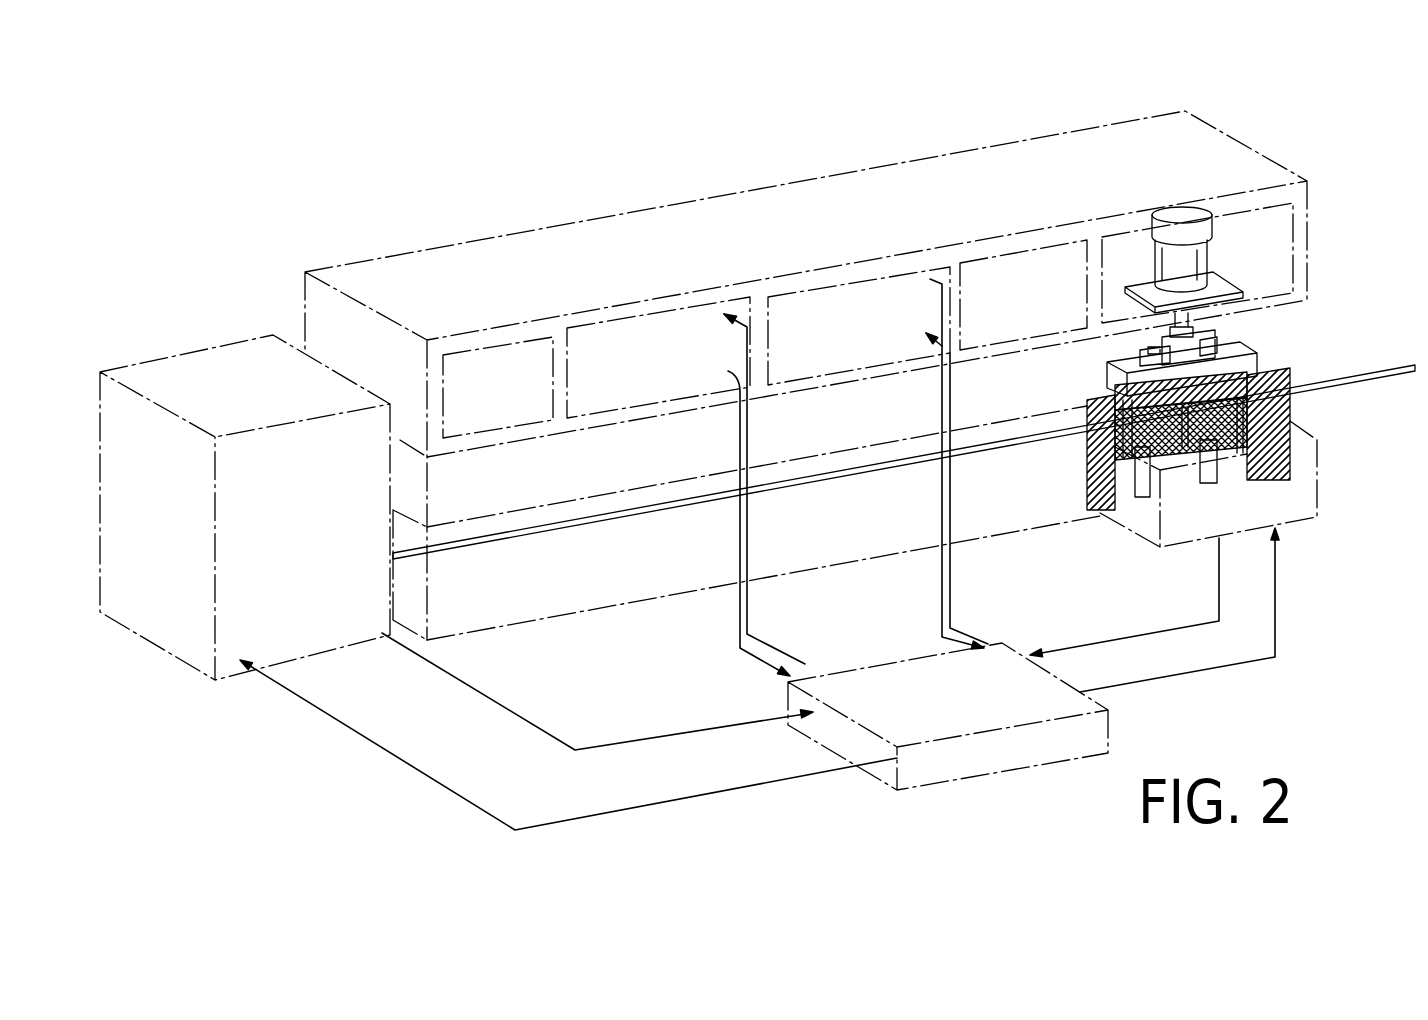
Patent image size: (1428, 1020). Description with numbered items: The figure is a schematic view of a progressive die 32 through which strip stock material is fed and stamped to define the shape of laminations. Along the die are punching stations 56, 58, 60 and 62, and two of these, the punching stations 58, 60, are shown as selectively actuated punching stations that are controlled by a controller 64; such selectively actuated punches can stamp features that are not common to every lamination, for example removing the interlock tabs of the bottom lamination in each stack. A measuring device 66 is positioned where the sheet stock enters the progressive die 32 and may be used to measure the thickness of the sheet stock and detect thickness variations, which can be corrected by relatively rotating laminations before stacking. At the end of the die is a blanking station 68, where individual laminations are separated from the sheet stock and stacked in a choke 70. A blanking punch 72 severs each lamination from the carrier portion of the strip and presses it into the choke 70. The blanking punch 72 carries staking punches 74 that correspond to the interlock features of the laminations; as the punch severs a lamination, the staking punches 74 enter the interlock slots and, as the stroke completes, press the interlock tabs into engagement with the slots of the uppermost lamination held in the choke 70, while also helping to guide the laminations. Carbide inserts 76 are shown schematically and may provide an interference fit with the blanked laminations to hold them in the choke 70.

The progressive die 32 is at (724, 138).
The punching station 56 is at (505, 355).
The selectively actuated punching station 58 is at (680, 320).
The selectively actuated punching station 60 is at (870, 292).
The punching station 62 is at (1037, 260).
The controller 64 is at (997, 755).
The measuring device 66 is at (207, 367).
The blanking station 68 is at (1260, 217).
The choke 70 is at (1318, 515).
The blanking punch 72 is at (1250, 358).
The staking punches 74 is at (1098, 402).
The carbide inserts 76 is at (1145, 497).